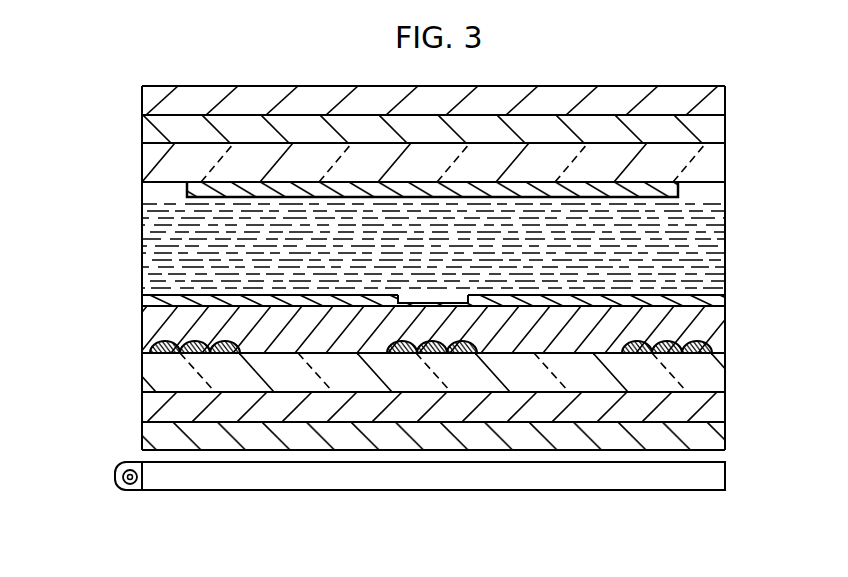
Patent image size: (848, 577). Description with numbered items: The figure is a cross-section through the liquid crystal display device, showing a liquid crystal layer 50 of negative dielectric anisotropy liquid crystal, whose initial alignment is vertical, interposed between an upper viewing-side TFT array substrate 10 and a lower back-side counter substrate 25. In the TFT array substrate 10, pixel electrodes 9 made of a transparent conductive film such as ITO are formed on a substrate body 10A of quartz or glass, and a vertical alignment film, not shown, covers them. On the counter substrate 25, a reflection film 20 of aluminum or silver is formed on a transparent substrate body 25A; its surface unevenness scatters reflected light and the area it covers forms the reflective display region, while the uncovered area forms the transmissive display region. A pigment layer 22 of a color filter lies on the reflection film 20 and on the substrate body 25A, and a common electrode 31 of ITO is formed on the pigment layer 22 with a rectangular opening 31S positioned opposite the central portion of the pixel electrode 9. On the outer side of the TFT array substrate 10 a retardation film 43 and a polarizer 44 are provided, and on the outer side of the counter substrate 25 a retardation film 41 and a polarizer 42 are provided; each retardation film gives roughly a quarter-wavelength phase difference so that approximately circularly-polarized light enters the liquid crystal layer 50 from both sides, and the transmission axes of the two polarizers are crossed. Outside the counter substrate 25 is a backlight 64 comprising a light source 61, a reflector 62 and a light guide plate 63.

The polarizer 44 is at (725, 95).
The retardation film 43 is at (725, 125).
The TFT array substrate 10 is at (138, 143).
The substrate body 10A is at (725, 157).
The pixel electrode 9 is at (725, 196).
The liquid crystal layer 50 is at (725, 240).
The counter substrate 25 is at (138, 295).
The common electrode 31 is at (725, 300).
The opening 31S is at (460, 302).
The pigment layer 22 is at (725, 322).
The reflection film 20 is at (196, 356).
The substrate body 25A is at (725, 373).
The retardation film 41 is at (725, 403).
The polarizer 42 is at (725, 435).
The backlight 64 is at (107, 448).
The light guide plate 63 is at (725, 472).
The reflector 62 is at (118, 481).
The light source 61 is at (127, 485).